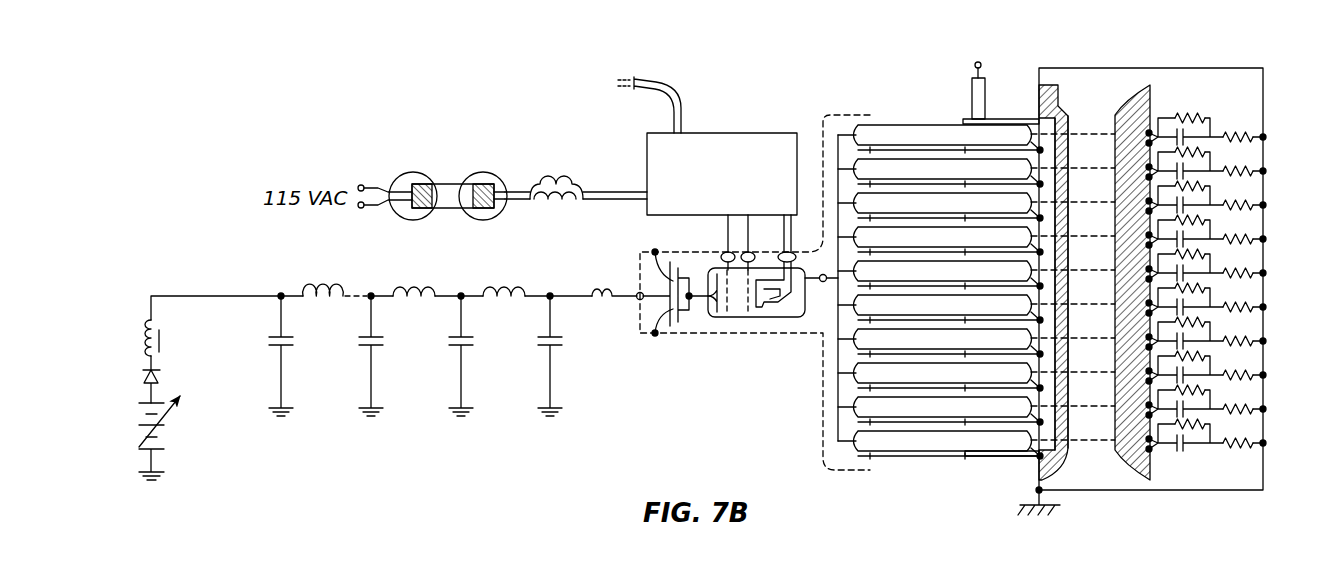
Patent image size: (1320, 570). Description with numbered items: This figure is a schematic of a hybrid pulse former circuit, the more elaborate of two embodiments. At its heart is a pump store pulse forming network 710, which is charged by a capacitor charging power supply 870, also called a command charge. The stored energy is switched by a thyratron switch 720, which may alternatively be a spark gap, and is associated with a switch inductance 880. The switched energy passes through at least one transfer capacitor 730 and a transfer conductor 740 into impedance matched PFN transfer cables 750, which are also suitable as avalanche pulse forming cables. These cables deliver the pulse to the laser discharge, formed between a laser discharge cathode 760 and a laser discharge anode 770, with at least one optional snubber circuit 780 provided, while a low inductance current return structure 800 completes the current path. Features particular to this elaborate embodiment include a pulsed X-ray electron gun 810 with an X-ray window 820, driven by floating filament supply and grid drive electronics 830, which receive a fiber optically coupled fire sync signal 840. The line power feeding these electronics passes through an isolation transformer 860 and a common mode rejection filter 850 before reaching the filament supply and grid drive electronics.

The pump store pulse forming network 710 is at (528, 272).
The thyratron switch 720 is at (719, 321).
The transfer capacitor 730 is at (665, 296).
The transfer conductor 740 is at (590, 276).
The impedance matched PFN transfer cables 750 is at (940, 457).
The laser discharge cathode 760 is at (1057, 100).
The laser discharge anode 770 is at (1130, 97).
The snubber circuit 780 is at (1178, 458).
The low inductance current return structure 800 is at (826, 108).
The pulsed X-ray electron gun 810 is at (1002, 114).
The X-ray window 820 is at (1069, 133).
The floating filament supply and grid drive electronics 830 is at (742, 187).
The fiber optically coupled fire sync signal 840 is at (658, 95).
The common mode rejection filter 850 is at (558, 174).
The isolation transformer 860 is at (449, 180).
The capacitor charging power supply 870 is at (128, 318).
The switch inductance 880 is at (822, 284).